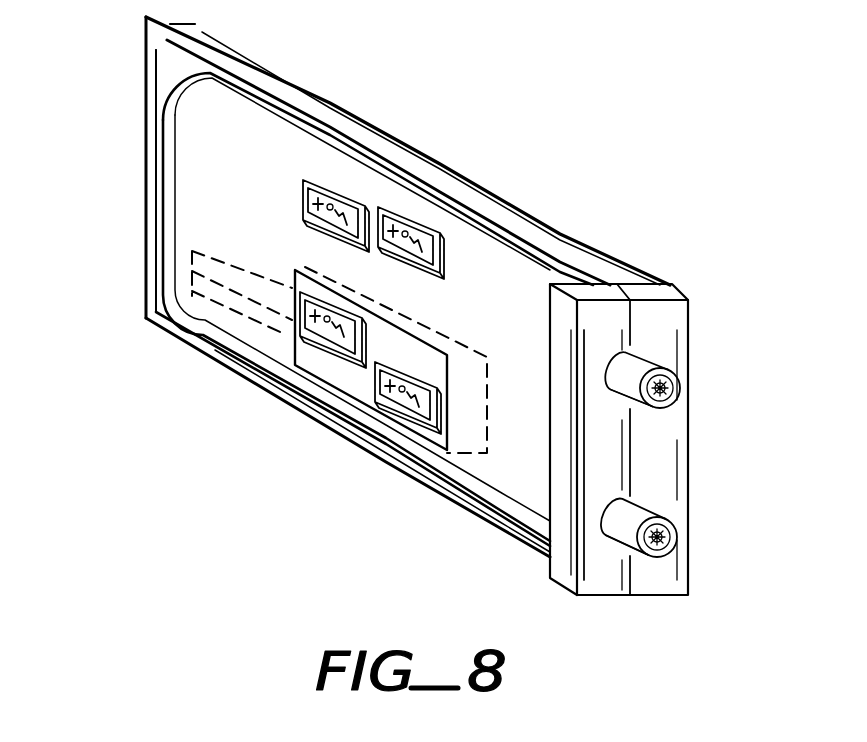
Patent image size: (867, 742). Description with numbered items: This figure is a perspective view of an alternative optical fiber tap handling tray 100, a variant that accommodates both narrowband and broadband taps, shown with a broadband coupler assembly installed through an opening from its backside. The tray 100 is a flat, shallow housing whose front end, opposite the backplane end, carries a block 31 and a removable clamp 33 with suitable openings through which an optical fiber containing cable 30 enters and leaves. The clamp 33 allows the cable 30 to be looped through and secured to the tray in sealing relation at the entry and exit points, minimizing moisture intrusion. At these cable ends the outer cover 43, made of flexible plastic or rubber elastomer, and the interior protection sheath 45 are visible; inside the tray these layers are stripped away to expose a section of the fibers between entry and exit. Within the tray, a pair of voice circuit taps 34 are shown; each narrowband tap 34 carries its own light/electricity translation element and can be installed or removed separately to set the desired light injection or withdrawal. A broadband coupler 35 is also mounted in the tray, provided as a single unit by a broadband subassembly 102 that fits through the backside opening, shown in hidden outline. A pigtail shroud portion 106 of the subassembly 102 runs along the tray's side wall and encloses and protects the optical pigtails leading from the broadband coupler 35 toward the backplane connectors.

The tray 100 is at (405, 498).
The broadband subassembly 102 is at (340, 392).
The pigtail shroud portion 106 is at (145, 265).
The voice circuit coupler or tap 34 is at (343, 192).
The broadband coupler 35 is at (298, 340).
The clamp 33 is at (598, 292).
The block 31 is at (650, 293).
The outer cover 43 is at (642, 352).
The interior protection sheath 45 is at (686, 522).
The optical fiber containing cable 30 is at (613, 398).